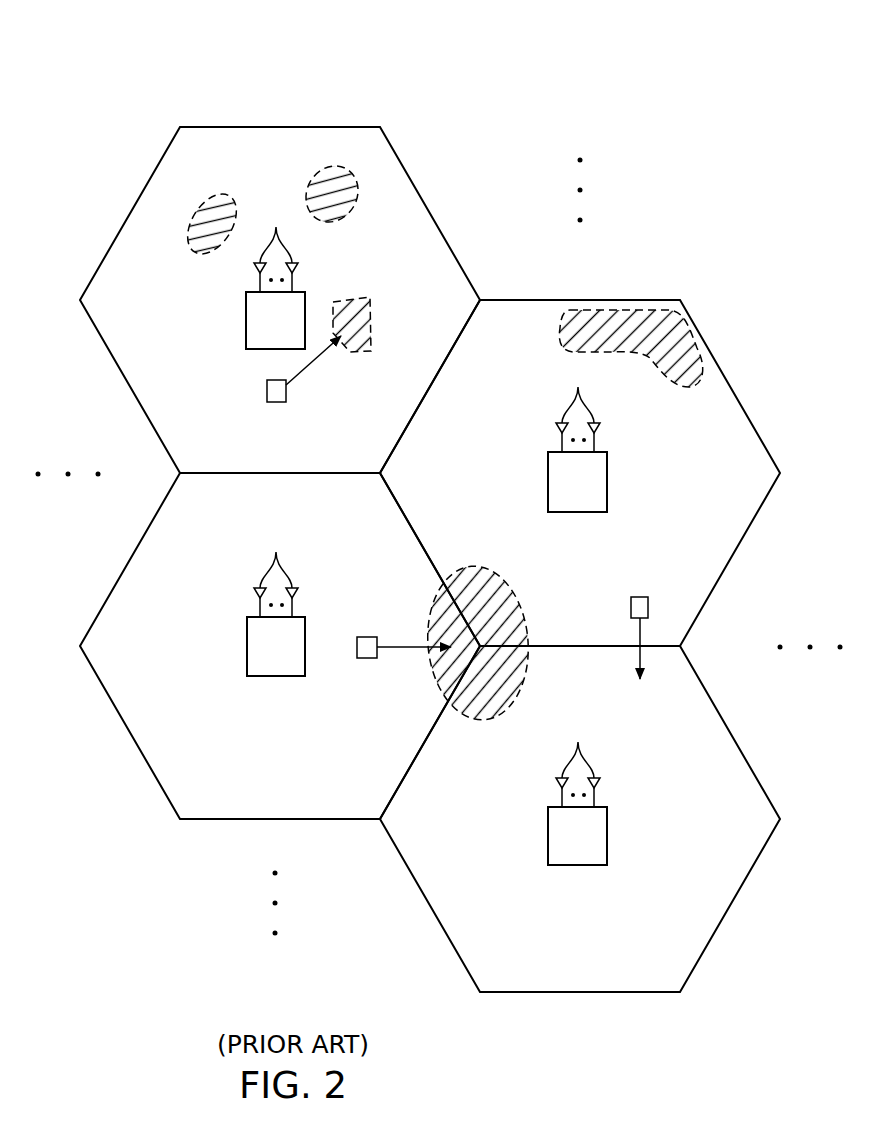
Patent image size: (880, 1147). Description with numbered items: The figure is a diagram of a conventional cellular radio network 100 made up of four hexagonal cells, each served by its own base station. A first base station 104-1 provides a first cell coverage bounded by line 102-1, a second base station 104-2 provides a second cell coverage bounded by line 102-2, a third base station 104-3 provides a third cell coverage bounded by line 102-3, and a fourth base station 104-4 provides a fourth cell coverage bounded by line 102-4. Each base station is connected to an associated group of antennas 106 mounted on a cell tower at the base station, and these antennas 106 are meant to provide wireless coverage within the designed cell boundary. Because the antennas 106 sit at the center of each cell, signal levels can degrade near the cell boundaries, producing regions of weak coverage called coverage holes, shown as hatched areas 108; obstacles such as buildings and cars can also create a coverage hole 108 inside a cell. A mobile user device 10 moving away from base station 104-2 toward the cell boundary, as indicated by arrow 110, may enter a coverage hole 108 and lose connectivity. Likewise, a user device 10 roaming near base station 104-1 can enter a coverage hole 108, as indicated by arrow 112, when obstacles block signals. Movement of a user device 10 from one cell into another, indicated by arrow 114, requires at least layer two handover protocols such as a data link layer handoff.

The conventional cellular radio network 100 is at (667, 48).
The first cell boundary line 102-1 is at (282, 121).
The second cell boundary line 102-2 is at (124, 554).
The third cell boundary line 102-3 is at (751, 396).
The fourth cell boundary line 102-4 is at (736, 727).
The first base station 104-1 is at (246, 320).
The second base station 104-2 is at (247, 645).
The third base station 104-3 is at (607, 478).
The fourth base station 104-4 is at (607, 833).
The antennas 106 is at (427, 505).
The coverage hole 108 is at (440, 437).
The mobile user device 10 is at (459, 546).
The arrow 110 is at (403, 634).
The arrow 112 is at (313, 363).
The arrow 114 is at (638, 662).